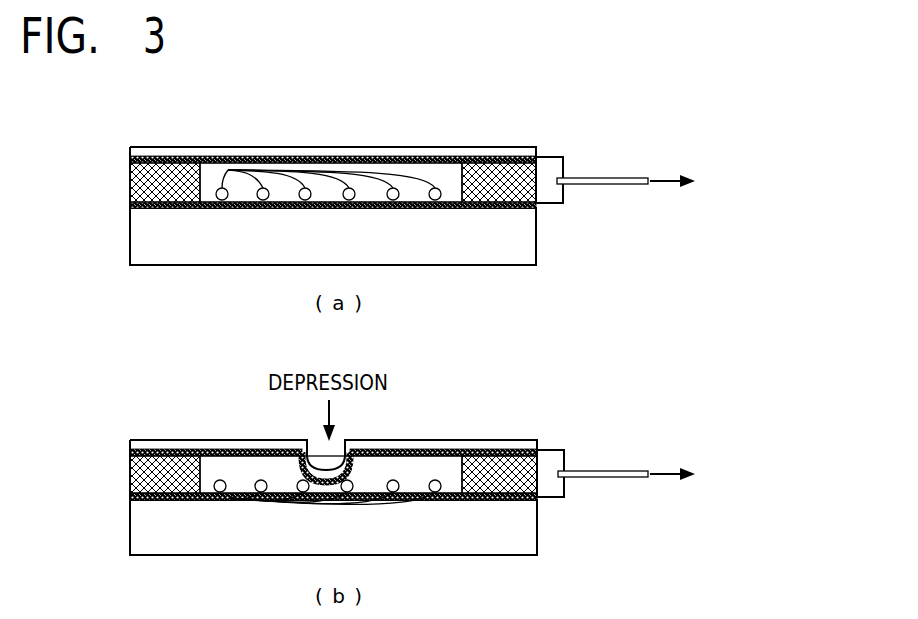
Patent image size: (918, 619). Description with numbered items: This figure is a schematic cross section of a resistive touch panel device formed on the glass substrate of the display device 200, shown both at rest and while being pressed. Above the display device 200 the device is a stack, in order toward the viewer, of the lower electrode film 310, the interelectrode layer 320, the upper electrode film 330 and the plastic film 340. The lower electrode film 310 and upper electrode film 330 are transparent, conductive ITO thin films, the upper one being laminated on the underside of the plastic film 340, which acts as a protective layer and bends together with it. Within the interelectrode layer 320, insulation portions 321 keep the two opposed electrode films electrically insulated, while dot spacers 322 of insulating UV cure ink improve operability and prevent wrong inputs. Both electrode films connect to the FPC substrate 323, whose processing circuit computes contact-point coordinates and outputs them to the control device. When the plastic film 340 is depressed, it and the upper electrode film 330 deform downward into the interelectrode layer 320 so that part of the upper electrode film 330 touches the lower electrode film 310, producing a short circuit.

The display device 200 is at (130, 245).
The lower electrode film 310 is at (130, 205).
The interelectrode layer 320 is at (445, 173).
The insulation portions 321 is at (165, 163).
The dot spacers 322 is at (228, 170).
The FPC substrate 323 is at (607, 179).
The upper electrode film 330 is at (130, 159).
The plastic film 340 is at (130, 151).